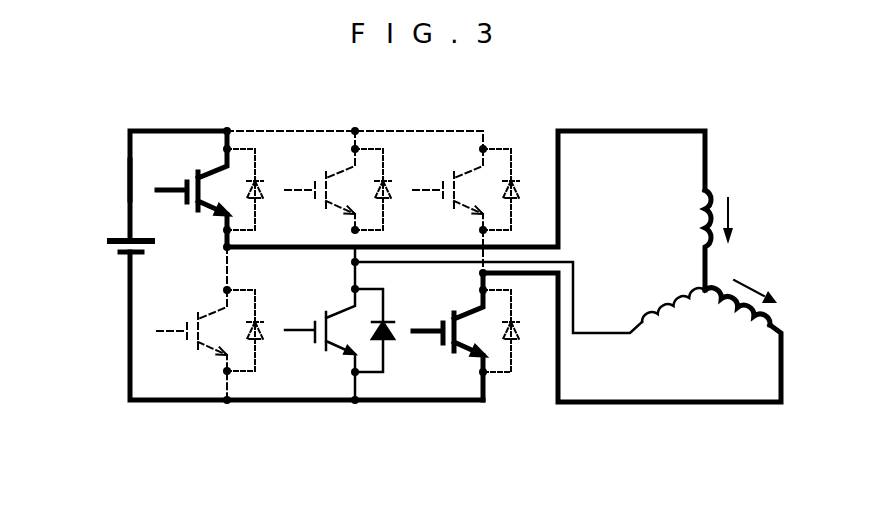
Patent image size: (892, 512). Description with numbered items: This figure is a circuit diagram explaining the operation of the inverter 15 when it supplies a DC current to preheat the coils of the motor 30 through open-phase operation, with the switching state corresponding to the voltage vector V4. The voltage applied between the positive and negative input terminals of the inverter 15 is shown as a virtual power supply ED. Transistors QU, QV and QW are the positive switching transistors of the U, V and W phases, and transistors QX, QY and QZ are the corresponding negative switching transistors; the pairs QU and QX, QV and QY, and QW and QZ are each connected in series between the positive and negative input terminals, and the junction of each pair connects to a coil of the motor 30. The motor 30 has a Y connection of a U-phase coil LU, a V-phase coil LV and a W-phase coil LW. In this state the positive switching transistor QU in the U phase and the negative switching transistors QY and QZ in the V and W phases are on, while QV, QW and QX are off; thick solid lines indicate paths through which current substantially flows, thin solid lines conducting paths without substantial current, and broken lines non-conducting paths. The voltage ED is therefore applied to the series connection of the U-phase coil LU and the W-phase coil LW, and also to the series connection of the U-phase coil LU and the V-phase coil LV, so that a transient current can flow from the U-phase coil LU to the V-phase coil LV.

The inverter 15 is at (104, 242).
The motor 30 is at (707, 245).
The positive switching transistor in U phase QU is at (210, 189).
The positive switching transistor in V phase QV is at (338, 180).
The positive switching transistor in W phase QW is at (466, 189).
The negative switching transistor in U phase QX is at (209, 345).
The negative switching transistor in V phase QY is at (339, 331).
The negative switching transistor in W phase QZ is at (466, 334).
The virtual power supply ED is at (113, 241).
The voltage vector V4 is at (93, 170).
The U-phase coil LU is at (725, 218).
The V-phase coil LV is at (650, 310).
The W-phase coil LW is at (762, 312).